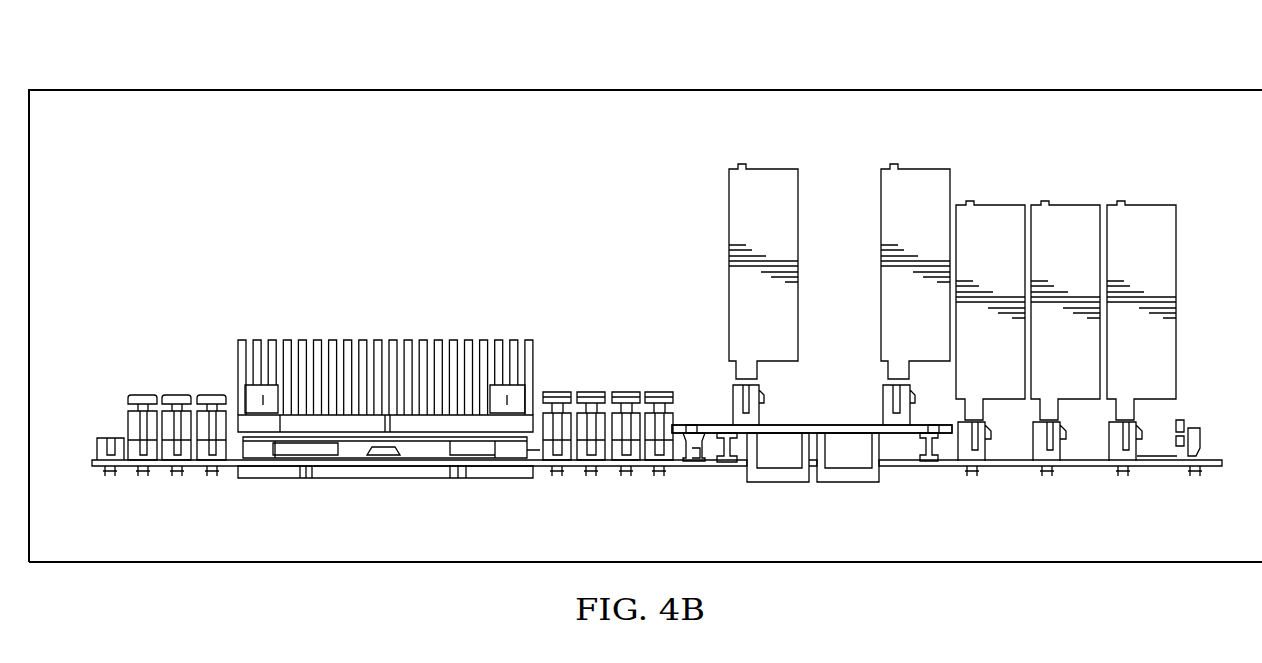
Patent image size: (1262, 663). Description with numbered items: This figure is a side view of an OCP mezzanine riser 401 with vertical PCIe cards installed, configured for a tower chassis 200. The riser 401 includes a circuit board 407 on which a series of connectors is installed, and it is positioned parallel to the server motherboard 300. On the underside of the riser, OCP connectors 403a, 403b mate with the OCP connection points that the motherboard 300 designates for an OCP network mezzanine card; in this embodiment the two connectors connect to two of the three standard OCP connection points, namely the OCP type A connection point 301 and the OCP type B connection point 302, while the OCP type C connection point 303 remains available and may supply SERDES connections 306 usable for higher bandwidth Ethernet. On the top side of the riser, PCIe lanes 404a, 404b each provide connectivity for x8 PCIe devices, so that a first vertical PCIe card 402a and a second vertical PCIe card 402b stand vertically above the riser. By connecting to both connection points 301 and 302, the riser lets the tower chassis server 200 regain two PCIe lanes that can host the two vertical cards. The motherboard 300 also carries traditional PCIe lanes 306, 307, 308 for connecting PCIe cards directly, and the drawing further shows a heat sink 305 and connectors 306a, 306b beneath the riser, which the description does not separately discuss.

The tower chassis 200 is at (207, 81).
The server motherboard 300 is at (1162, 467).
The OCP type A connection point 301 is at (912, 437).
The OCP type B connection point 302 is at (682, 466).
The OCP type C connection point 303 is at (725, 466).
The heat sink 305 is at (377, 338).
The PCIe lane 306 is at (1109, 450).
The connector 306a is at (848, 482).
The connector 306b is at (782, 482).
The PCIe lane 307 is at (1033, 450).
The PCIe lane 308 is at (985, 452).
The OCP mezzanine riser 401 is at (682, 425).
The vertical PCIe card 402a is at (926, 175).
The vertical PCIe card 402b is at (771, 175).
The OCP connector 403a is at (932, 434).
The OCP connector 403b is at (688, 437).
The PCIe lane 404a is at (912, 408).
The PCIe lane 404b is at (762, 408).
The circuit board 407 is at (812, 423).